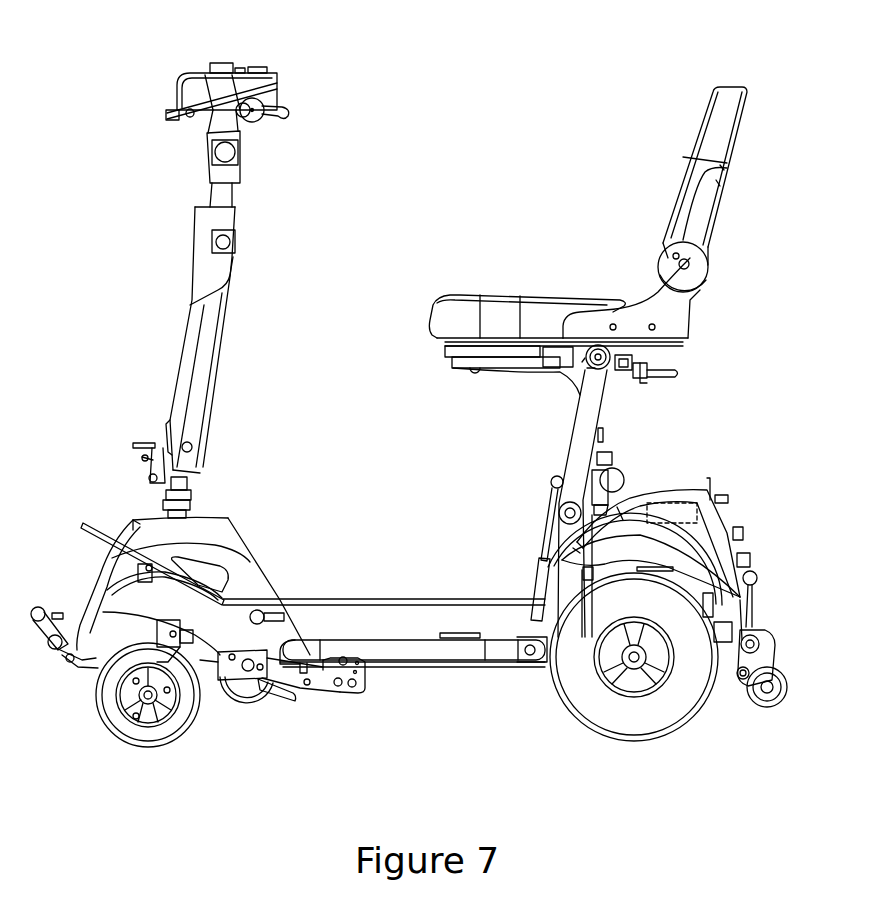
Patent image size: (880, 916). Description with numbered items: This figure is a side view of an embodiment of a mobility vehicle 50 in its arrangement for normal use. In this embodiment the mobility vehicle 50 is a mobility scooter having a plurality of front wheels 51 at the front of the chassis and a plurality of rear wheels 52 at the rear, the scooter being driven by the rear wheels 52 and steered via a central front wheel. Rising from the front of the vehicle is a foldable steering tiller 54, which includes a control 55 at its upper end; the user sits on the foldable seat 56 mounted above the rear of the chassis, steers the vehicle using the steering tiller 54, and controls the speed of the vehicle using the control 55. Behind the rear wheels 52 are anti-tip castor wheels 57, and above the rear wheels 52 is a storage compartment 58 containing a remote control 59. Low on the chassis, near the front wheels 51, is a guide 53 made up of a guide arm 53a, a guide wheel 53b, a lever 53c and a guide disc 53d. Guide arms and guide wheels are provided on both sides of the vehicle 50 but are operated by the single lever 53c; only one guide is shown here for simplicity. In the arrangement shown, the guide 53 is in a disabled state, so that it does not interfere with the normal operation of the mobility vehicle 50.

The mobility vehicle 50 is at (576, 76).
The front wheels 51 is at (118, 740).
The rear wheels 52 is at (687, 723).
The guide 53 is at (378, 717).
The guide arm 53a is at (318, 692).
The guide wheel 53b is at (240, 708).
The lever 53c is at (292, 604).
The guide disc 53d is at (273, 710).
The foldable steering tiller 54 is at (169, 135).
The control 55 is at (292, 110).
The foldable seat 56 is at (735, 208).
The anti-tip castor wheels 57 is at (786, 673).
The storage compartment 58 is at (683, 477).
The remote control 59 is at (722, 516).